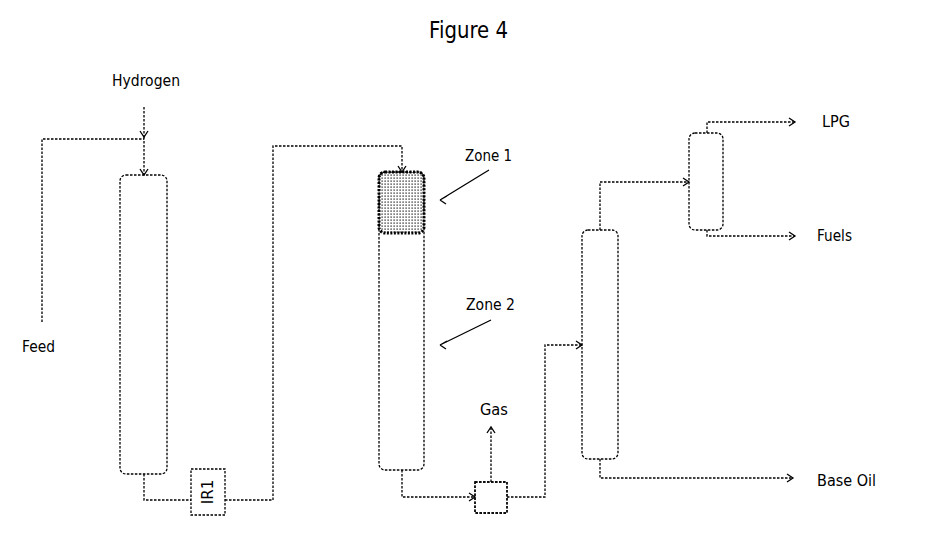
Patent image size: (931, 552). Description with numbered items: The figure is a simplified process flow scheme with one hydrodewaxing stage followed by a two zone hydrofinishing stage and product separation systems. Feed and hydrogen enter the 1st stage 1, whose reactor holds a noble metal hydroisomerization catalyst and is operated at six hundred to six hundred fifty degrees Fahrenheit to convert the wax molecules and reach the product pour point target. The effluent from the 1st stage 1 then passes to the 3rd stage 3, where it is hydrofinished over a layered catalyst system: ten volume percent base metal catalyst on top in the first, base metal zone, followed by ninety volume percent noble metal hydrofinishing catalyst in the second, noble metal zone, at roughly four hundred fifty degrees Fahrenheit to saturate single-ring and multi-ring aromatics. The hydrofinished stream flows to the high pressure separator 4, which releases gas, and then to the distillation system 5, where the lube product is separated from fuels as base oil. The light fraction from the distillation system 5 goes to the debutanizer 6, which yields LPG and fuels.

The 1st stage 1 is at (143, 324).
The 3rd stage 3 is at (401, 321).
The high pressure separator 4 is at (491, 497).
The distillation system 5 is at (600, 344).
The debutanizer 6 is at (706, 181).